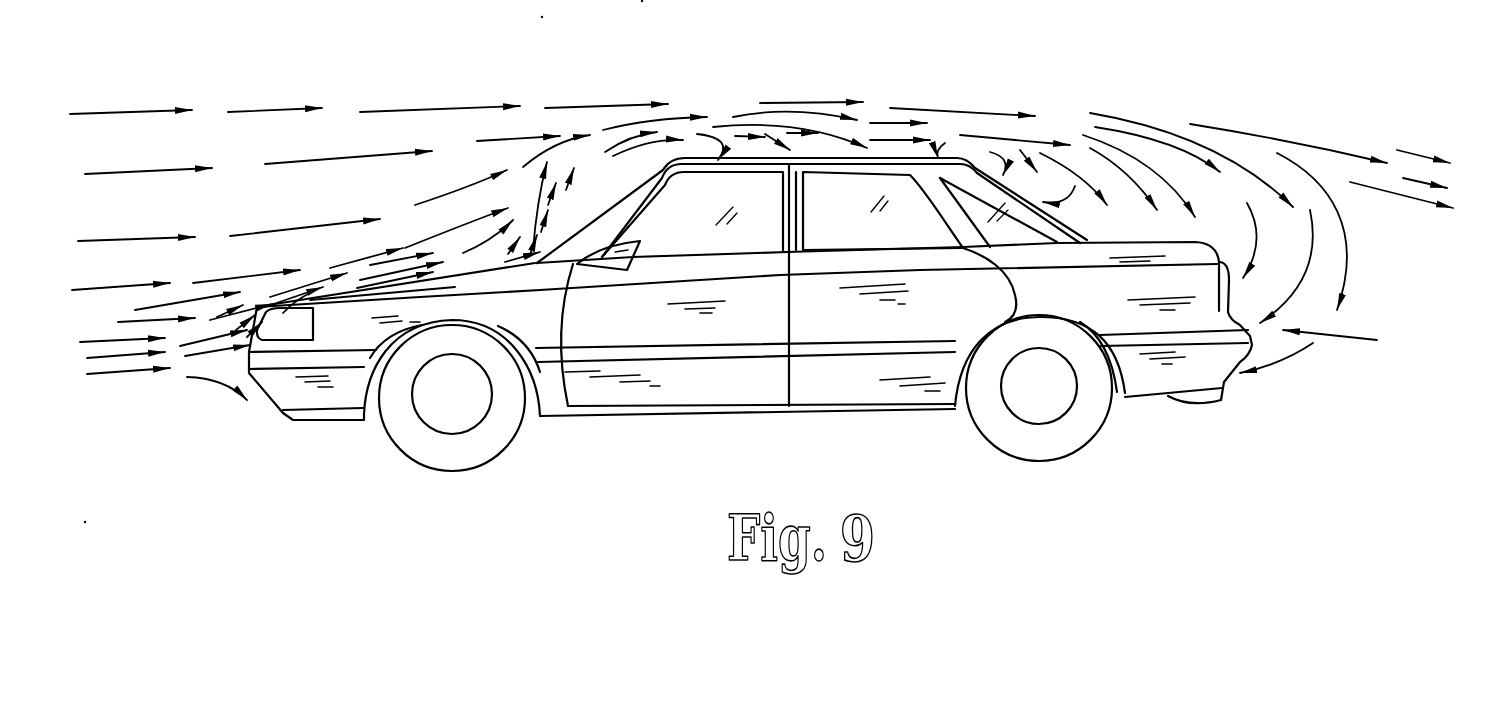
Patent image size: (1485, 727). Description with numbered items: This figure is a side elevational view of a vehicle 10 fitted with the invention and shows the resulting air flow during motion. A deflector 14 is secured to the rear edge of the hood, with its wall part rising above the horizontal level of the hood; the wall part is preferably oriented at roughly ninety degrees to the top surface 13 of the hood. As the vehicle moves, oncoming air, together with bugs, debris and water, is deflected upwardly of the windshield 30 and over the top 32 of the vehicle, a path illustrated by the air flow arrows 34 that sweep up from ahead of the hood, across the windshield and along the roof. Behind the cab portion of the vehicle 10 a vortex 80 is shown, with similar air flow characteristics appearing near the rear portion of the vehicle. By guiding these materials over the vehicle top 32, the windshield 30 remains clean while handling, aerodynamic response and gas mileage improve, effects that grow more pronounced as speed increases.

The vehicle 10 is at (960, 315).
The top surface of the hood 13 is at (500, 278).
The deflector 14 is at (547, 266).
The windshield 30 is at (632, 203).
The top 32 is at (845, 160).
The arrows 34 is at (450, 108).
The vortex 80 is at (995, 164).